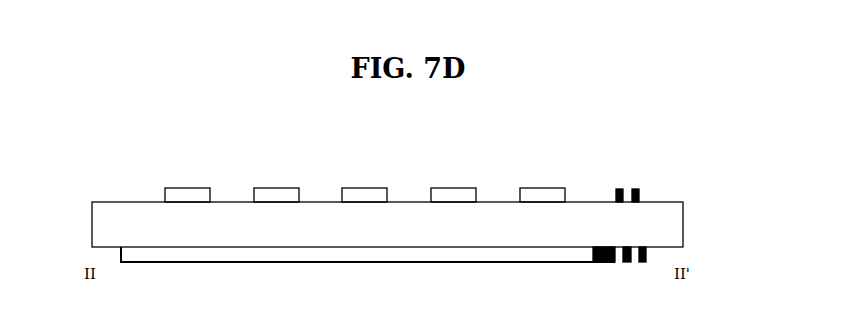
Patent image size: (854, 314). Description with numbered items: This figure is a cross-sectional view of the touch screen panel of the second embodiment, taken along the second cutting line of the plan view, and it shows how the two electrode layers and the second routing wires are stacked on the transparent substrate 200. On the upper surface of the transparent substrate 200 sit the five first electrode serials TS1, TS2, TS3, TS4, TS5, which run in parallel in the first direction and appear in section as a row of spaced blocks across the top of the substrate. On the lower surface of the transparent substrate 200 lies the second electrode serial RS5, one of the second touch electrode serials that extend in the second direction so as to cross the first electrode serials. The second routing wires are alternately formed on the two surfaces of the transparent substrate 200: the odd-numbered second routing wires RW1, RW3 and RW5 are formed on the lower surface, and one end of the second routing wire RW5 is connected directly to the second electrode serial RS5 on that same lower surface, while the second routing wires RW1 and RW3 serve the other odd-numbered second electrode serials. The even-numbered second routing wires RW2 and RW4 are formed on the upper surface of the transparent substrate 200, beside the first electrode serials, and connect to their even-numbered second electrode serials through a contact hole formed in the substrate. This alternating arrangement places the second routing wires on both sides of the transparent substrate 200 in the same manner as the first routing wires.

The transparent substrate 200 is at (677, 225).
The second electrode serial RS5 is at (369, 257).
The first electrode serial TS1 is at (186, 190).
The first electrode serial TS2 is at (276, 190).
The first electrode serial TS3 is at (366, 190).
The first electrode serial TS4 is at (455, 190).
The first electrode serial TS5 is at (544, 190).
The second routing wire RW1 is at (643, 263).
The second routing wire RW2 is at (636, 188).
The second routing wire RW3 is at (626, 263).
The second routing wire RW4 is at (619, 188).
The second routing wire RW5 is at (603, 263).